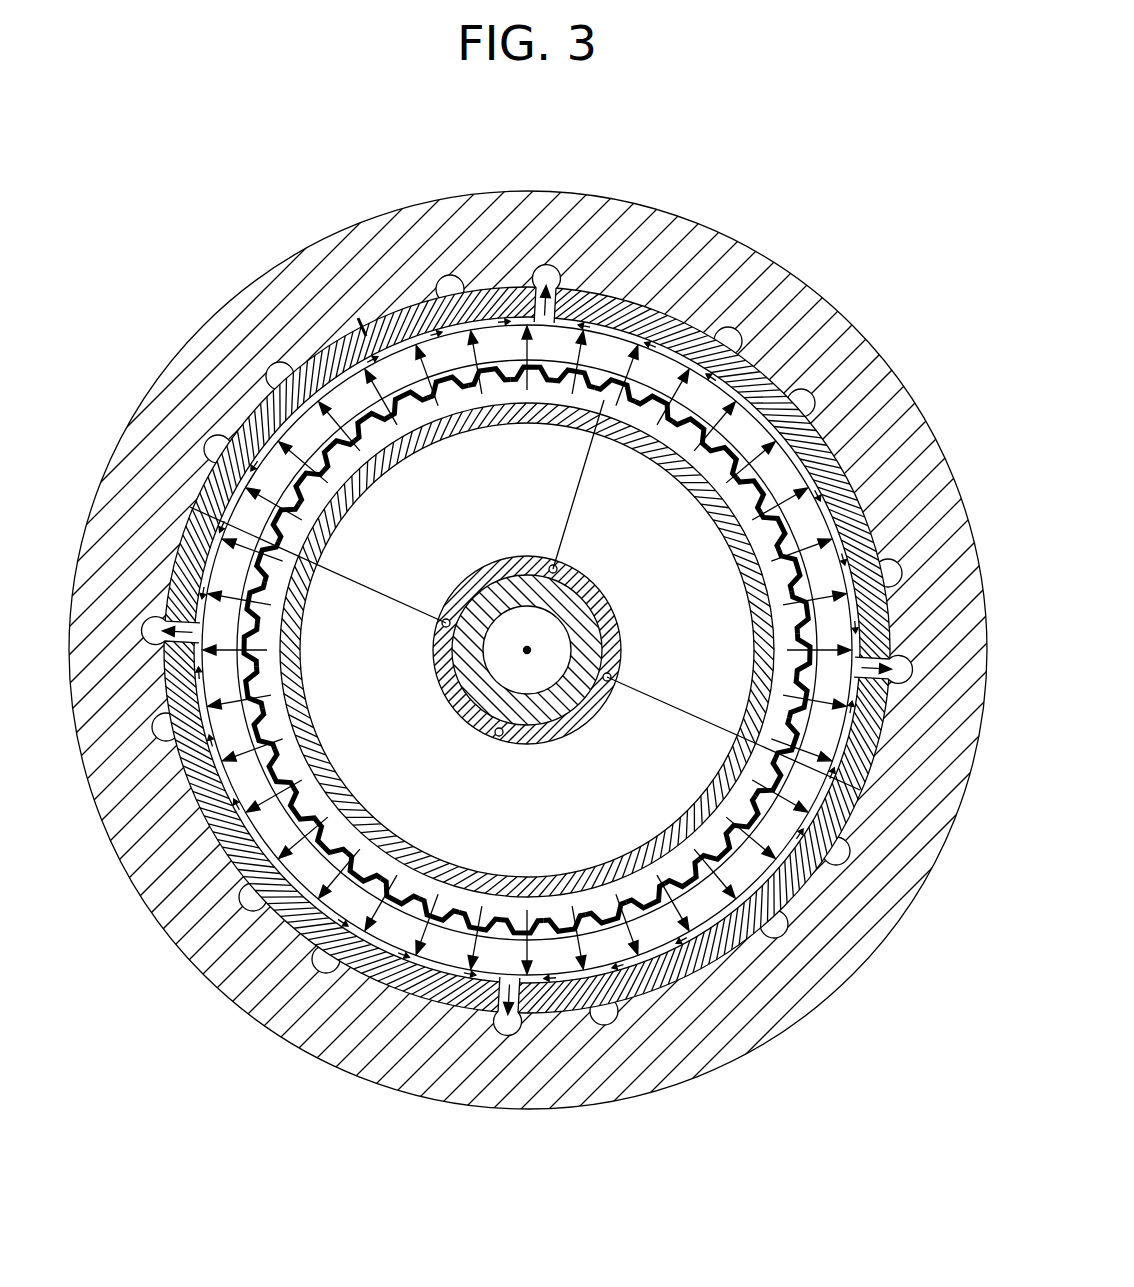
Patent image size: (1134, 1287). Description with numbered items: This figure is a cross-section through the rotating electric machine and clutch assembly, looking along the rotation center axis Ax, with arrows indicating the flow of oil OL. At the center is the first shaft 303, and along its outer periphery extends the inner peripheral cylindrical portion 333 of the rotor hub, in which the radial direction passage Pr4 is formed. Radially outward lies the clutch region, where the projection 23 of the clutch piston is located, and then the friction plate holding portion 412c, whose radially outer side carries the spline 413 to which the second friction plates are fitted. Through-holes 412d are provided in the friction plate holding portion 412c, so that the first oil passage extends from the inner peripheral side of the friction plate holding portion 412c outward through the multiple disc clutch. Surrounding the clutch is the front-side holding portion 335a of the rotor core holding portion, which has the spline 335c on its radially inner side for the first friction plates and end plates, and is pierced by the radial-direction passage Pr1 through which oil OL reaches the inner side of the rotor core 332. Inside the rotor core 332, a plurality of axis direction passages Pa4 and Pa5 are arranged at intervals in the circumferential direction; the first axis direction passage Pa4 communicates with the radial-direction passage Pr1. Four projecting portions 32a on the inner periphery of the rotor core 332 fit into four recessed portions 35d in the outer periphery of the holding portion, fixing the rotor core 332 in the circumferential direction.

The rotor core 332 is at (708, 262).
The front-side holding portion 335a is at (823, 447).
The spline 335c is at (880, 524).
The recessed portion 35d is at (362, 322).
The first axis direction passage Pa4 is at (552, 290).
The second axis direction passage Pa5 is at (452, 276).
The radial-direction passage Pr1 is at (565, 283).
The radial direction passage Pr4 is at (549, 566).
The projecting portion 32a is at (370, 335).
The spline 413 is at (325, 512).
The friction plate holding portion 412c is at (305, 628).
The through-hole 412d is at (305, 715).
The projection 23 is at (747, 587).
The inner peripheral cylindrical portion 333 is at (462, 598).
The first shaft 303 is at (561, 712).
The rotation center axis Ax is at (527, 650).
The oil OL is at (350, 940).